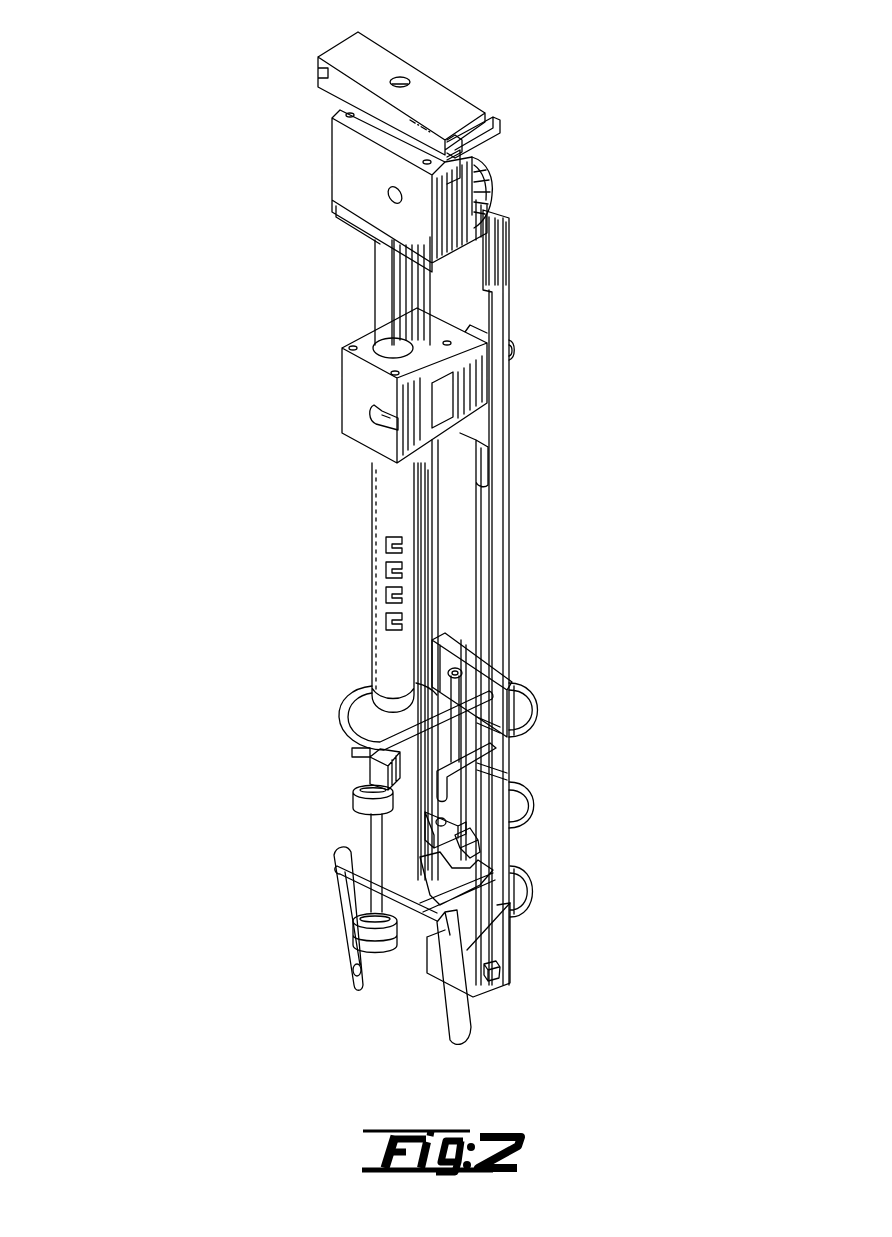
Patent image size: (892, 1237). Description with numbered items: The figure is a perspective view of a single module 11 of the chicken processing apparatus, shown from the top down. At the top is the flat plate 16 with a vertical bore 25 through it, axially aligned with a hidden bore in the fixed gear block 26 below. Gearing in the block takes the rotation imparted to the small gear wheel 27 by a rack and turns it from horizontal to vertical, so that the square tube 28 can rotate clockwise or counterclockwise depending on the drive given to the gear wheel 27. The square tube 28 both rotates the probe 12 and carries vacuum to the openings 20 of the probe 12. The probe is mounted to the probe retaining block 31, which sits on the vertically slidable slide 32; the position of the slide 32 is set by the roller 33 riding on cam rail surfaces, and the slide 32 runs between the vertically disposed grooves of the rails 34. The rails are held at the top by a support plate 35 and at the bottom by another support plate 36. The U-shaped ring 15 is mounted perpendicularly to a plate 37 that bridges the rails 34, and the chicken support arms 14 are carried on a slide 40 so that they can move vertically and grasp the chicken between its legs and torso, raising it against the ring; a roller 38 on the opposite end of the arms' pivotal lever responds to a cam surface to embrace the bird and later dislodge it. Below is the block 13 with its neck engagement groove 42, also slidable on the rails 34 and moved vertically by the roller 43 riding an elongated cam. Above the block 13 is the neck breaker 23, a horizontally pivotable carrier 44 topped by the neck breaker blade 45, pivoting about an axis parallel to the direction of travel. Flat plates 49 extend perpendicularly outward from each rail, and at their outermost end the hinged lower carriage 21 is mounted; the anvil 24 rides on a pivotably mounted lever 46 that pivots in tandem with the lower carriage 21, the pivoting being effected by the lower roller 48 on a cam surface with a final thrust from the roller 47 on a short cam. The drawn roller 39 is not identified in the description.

The module 11 is at (545, 237).
The probe 12 is at (382, 497).
The block 13 is at (510, 885).
The arms 14 is at (488, 764).
The U-shaped ring 15 is at (340, 700).
The flat plate 16 is at (457, 108).
The openings 20 is at (385, 597).
The lower carriage 21 is at (348, 912).
The neck breaker 23 is at (470, 860).
The anvil 24 is at (370, 762).
The vertical bore 25 is at (400, 76).
The fixed gear block 26 is at (347, 177).
The small gear wheel 27 is at (493, 180).
The square tube 28 is at (382, 278).
The probe retaining block 31 is at (357, 397).
The slide 32 is at (484, 465).
The roller 33 is at (512, 350).
The rails 34 is at (490, 440).
The support plate 35 is at (488, 208).
The support plate 36 is at (508, 950).
The plate 37 is at (500, 717).
The roller 38 is at (468, 638).
The roller 39 is at (525, 712).
The slide 40 is at (498, 825).
The neck engagement groove 42 is at (430, 962).
The roller 43 is at (500, 905).
The carrier 44 is at (470, 856).
The neck breaker blade 45 is at (392, 828).
The lever 46 is at (397, 860).
The roller 47 is at (357, 800).
The lower roller 48 is at (363, 947).
The flat plates 49 is at (517, 800).